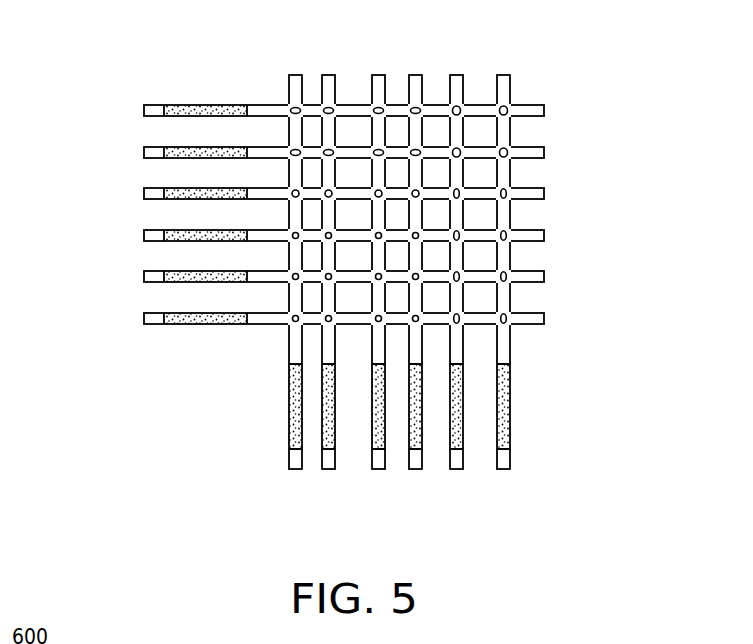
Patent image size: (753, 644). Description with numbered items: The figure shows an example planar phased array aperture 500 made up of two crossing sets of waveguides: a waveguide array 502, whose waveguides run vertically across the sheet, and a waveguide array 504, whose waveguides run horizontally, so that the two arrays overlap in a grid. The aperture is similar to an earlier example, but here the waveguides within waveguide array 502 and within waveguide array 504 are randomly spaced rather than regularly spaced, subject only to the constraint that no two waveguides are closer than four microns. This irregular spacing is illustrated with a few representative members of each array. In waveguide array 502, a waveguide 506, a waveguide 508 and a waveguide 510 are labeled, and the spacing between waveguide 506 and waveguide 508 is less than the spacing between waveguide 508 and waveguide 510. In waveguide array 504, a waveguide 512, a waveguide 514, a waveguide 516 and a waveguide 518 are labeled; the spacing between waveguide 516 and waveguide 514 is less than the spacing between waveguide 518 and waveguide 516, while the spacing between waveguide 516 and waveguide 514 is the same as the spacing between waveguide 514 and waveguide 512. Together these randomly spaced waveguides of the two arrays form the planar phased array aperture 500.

The planar phased array aperture 500 is at (244, 358).
The waveguide array 502 is at (542, 68).
The waveguide array 504 is at (563, 70).
The waveguide 506 is at (294, 468).
The waveguide 508 is at (329, 468).
The waveguide 510 is at (379, 468).
The waveguide 512 is at (150, 318).
The waveguide 514 is at (150, 276).
The waveguide 516 is at (150, 236).
The waveguide 518 is at (150, 193).